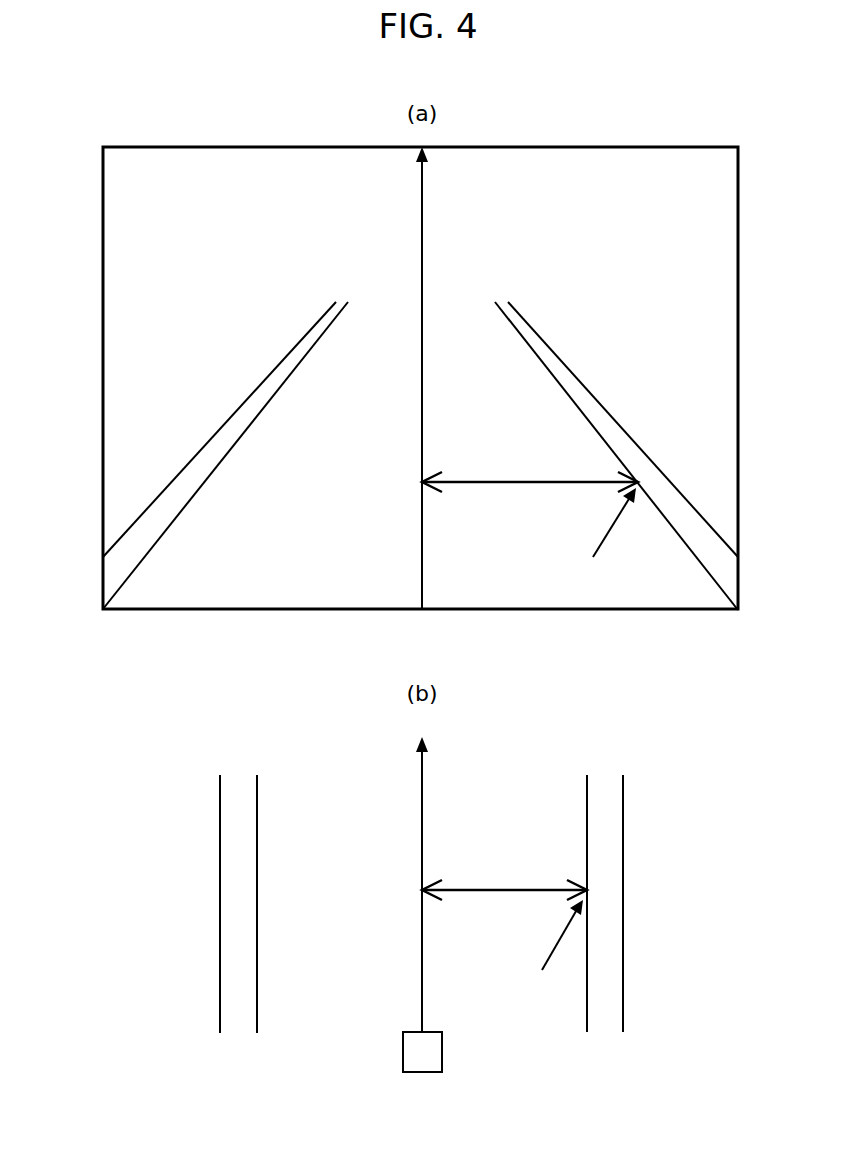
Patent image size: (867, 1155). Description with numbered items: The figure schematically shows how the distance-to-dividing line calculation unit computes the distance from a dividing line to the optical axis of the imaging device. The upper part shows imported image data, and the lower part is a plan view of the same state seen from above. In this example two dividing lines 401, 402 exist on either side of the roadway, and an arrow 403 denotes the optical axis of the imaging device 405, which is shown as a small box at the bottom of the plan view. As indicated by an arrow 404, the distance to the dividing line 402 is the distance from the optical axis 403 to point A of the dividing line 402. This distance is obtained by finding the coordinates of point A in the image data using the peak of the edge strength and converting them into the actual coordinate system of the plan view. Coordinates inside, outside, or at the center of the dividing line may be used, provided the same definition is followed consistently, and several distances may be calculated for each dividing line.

The dividing line 401 is at (295, 346).
The dividing line 402 is at (552, 347).
The optical axis 403 is at (422, 207).
The arrow 404 is at (497, 480).
The imaging device 405 is at (443, 1052).
The point A is at (604, 533).